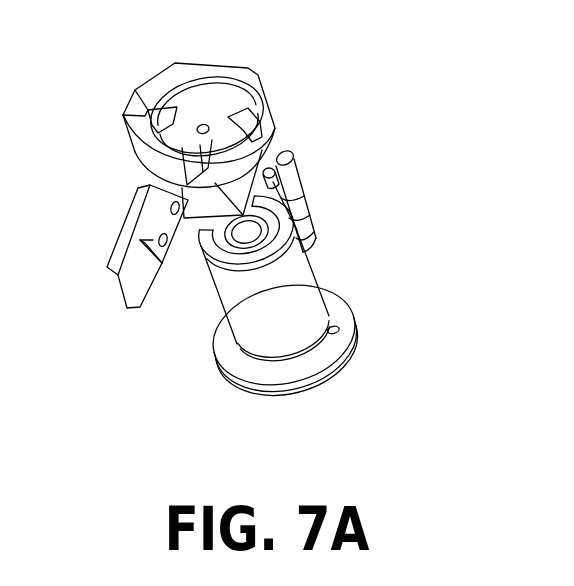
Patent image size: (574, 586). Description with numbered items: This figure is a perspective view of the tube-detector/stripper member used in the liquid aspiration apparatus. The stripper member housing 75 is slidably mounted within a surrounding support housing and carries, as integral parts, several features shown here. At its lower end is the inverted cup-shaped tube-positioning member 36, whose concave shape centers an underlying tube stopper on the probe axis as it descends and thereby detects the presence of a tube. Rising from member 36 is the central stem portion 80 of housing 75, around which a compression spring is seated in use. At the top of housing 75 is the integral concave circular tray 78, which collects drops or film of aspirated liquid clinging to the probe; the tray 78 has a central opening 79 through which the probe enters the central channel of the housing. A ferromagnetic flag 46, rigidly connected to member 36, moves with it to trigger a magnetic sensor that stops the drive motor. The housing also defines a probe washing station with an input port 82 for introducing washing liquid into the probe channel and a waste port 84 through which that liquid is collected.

The tube-positioning member 36 is at (228, 366).
The flag 46 is at (125, 278).
The stripper member housing 75 is at (318, 263).
The concave circular tray 78 is at (260, 96).
The central opening 79 is at (204, 125).
The central stem portion 80 is at (224, 238).
The input port 82 is at (266, 166).
The waste port 84 is at (300, 186).